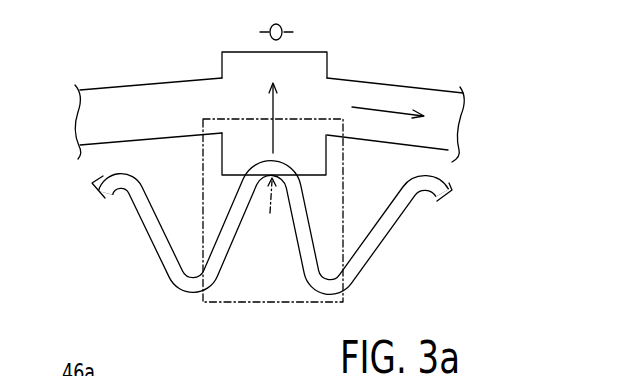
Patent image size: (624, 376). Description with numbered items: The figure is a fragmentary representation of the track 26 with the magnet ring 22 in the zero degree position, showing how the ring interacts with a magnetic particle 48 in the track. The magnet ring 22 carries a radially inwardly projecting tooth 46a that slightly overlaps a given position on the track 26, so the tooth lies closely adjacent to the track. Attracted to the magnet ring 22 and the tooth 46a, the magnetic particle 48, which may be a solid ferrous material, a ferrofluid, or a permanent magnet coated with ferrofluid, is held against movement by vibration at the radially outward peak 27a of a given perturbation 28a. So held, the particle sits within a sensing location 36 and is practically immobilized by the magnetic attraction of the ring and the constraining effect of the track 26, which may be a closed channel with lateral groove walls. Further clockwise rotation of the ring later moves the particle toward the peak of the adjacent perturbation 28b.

The magnet ring 22 is at (110, 98).
The tooth 46a is at (318, 63).
The radially outward peak 27a is at (212, 174).
The sensing location 36 is at (343, 183).
The track 26 is at (143, 236).
The magnetic particle 48 is at (268, 208).
The perturbation 28a is at (288, 287).
The perturbation 28b is at (428, 217).